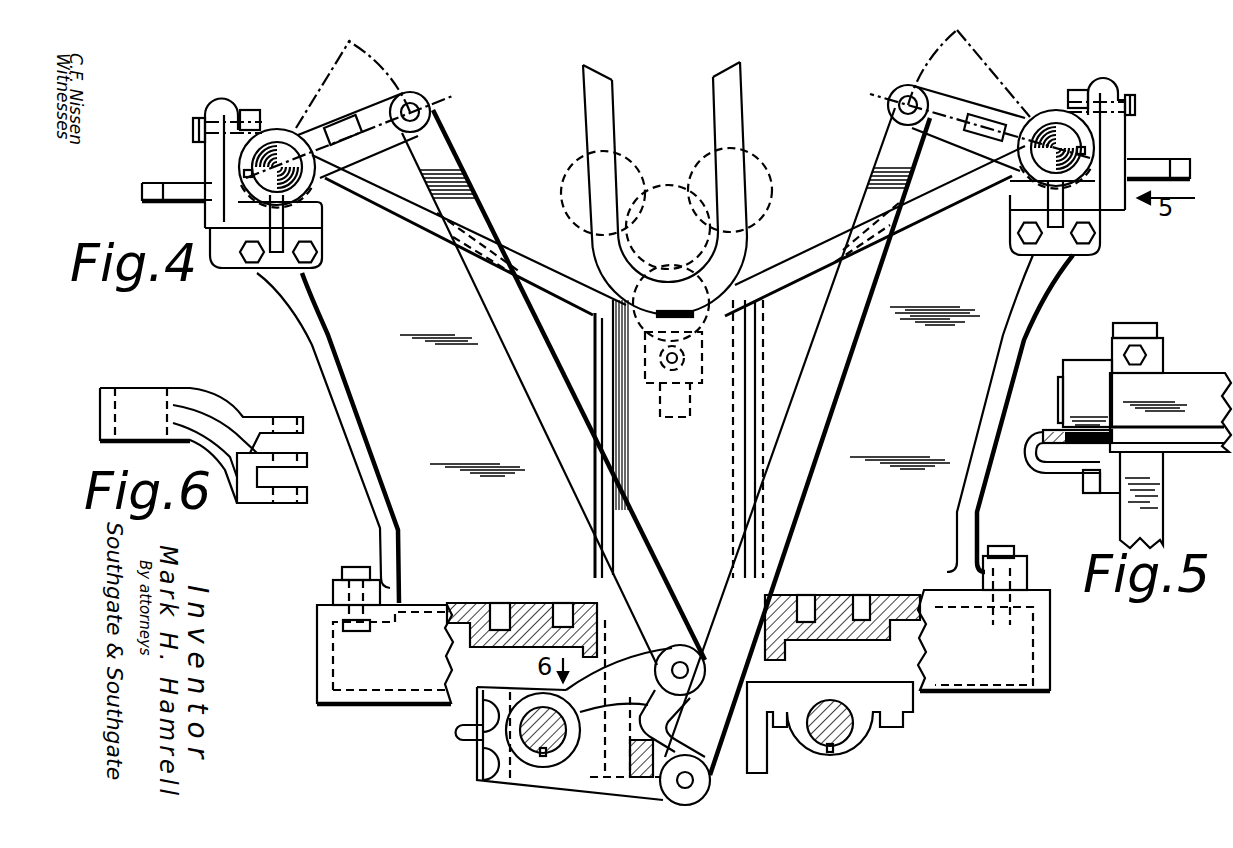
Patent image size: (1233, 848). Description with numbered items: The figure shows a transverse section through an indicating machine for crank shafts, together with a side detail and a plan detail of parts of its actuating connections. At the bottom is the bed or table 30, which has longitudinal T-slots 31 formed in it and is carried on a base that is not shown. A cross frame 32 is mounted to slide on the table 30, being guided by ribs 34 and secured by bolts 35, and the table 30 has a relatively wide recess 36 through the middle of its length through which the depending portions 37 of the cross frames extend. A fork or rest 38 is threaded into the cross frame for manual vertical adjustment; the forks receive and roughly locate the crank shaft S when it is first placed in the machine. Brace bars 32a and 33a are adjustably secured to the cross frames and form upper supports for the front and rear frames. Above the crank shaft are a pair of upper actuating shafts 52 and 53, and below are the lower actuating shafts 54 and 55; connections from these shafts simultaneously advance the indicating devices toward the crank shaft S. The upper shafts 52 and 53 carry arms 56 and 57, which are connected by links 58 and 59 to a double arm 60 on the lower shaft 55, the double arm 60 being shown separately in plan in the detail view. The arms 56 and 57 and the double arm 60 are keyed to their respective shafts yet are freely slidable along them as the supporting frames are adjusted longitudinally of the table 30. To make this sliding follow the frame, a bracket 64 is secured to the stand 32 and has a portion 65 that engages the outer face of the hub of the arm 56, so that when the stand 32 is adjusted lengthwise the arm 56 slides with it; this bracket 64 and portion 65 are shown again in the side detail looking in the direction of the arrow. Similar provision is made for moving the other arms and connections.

In FIG. 4, the bed or table 30 is at (320, 660).
In FIG. 4, the T-slots 31 is at (563, 607).
In FIG. 4, the cross frame 32 is at (797, 280).
In FIG. 5, the cross frame 32 is at (1152, 530).
In FIG. 4, the brace bar 32a is at (187, 175).
In FIG. 4, the brace bar 33a is at (1140, 167).
In FIG. 5, the brace bar 33a is at (1177, 383).
In FIG. 4, the ribs 34 is at (500, 607).
In FIG. 4, the bolts 35 is at (358, 566).
In FIG. 4, the recess 36 is at (773, 648).
In FIG. 4, the depending portions 37 is at (765, 772).
In FIG. 4, the fork or rest 38 is at (718, 103).
In FIG. 4, the upper actuating shaft 52 is at (1060, 140).
In FIG. 4, the upper actuating shaft 53 is at (277, 155).
In FIG. 4, the lower actuating shaft 54 is at (847, 738).
In FIG. 4, the lower actuating shaft 55 is at (533, 757).
In FIG. 4, the arm 56 is at (960, 97).
In FIG. 5, the arm 56 is at (1082, 363).
In FIG. 4, the arm 57 is at (367, 107).
In FIG. 4, the link 58 is at (826, 392).
In FIG. 4, the link 59 is at (545, 402).
In FIG. 4, the double arm 60 is at (647, 698).
In FIG. 6, the double arm 60 is at (240, 385).
In FIG. 4, the bracket 64 is at (322, 247).
In FIG. 5, the bracket 64 is at (1057, 464).
In FIG. 4, the portion 65 is at (322, 213).
In FIG. 5, the portion 65 is at (1054, 430).
In FIG. 4, the crank shaft S is at (666, 244).